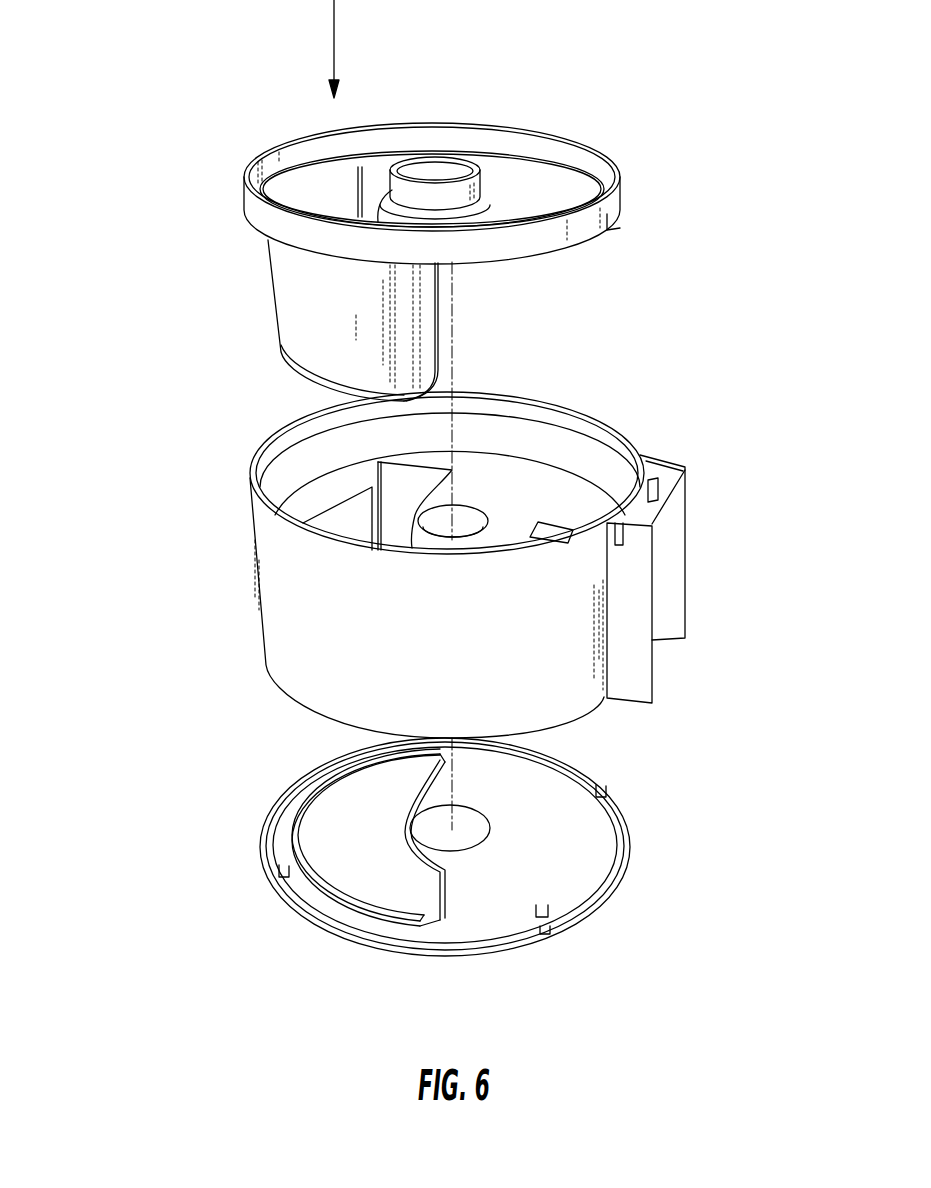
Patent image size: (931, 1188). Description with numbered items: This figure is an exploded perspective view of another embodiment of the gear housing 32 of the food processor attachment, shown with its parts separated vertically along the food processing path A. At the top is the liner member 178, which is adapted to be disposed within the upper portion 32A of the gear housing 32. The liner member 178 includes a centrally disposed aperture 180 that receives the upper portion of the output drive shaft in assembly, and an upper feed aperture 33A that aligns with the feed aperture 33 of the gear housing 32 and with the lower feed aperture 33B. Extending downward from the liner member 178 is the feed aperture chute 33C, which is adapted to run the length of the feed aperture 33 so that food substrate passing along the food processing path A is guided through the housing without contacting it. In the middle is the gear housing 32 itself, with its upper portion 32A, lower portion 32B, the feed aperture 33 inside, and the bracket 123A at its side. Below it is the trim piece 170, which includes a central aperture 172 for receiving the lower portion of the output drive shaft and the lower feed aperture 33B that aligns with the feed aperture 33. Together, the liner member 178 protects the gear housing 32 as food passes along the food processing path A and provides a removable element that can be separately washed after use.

The gear housing 32 is at (192, 162).
The upper portion of the gear housing 32A is at (598, 433).
The bowl side wall 32B is at (567, 705).
The feed aperture 33 is at (330, 520).
The upper feed aperture 33A is at (343, 180).
The lower feed aperture 33B is at (358, 875).
The feed aperture chute 33C is at (290, 320).
The mounting bracket 123A is at (658, 494).
The trim piece 170 is at (486, 867).
The central aperture 172 is at (470, 827).
The liner member 178 is at (475, 165).
The centrally disposed aperture 180 is at (460, 167).
The food processing path A is at (335, 32).